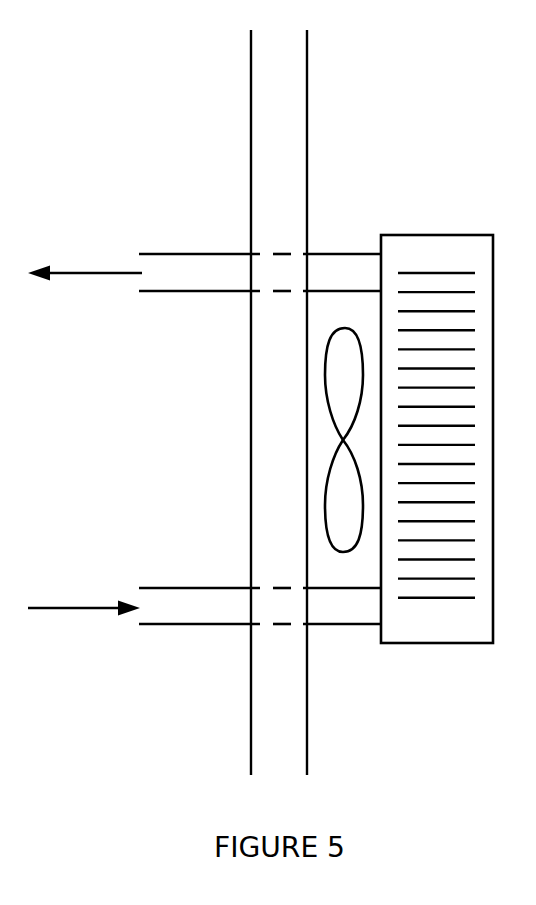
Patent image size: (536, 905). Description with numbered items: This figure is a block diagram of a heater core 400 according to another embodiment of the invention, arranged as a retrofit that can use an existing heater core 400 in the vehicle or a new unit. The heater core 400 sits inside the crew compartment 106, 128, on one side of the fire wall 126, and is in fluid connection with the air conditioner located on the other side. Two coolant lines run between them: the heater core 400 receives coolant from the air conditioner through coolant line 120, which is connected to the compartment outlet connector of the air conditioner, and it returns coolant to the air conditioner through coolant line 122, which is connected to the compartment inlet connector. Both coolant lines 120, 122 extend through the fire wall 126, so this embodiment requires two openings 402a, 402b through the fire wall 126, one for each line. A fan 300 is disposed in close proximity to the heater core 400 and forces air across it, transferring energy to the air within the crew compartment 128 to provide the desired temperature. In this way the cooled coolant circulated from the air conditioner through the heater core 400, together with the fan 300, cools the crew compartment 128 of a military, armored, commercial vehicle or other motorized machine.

The crew compartment 106 is at (180, 80).
The fire wall 126 is at (298, 80).
The crew compartment 128 is at (428, 80).
The coolant line 122 is at (204, 254).
The coolant line 120 is at (204, 623).
The fan 300 is at (325, 378).
The heater core 400 is at (436, 244).
The opening 402a is at (324, 643).
The opening 402b is at (326, 237).